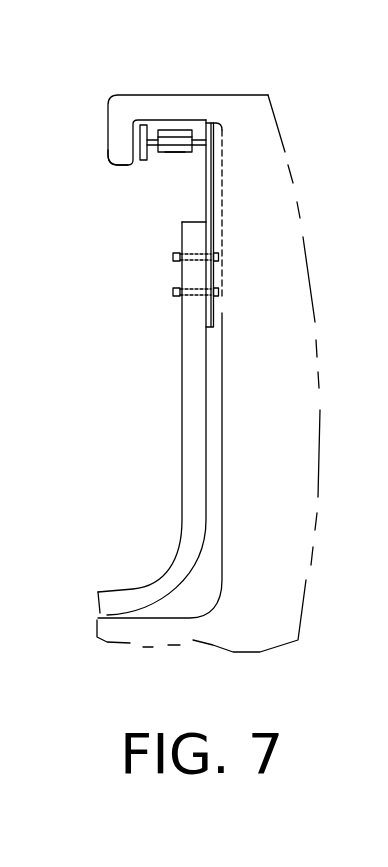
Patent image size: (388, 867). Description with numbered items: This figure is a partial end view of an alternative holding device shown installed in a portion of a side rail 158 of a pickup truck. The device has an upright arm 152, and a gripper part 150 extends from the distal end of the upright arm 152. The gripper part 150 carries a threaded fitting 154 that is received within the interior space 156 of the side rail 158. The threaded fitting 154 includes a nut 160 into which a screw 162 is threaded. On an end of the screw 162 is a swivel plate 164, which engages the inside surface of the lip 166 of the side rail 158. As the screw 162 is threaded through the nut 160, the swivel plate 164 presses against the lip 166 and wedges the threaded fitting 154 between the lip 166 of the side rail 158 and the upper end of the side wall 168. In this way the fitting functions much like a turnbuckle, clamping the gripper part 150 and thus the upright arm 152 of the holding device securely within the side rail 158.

The gripper part 150 is at (206, 242).
The upright arm 152 is at (190, 419).
The threaded fitting 154 is at (189, 121).
The interior space 156 is at (177, 154).
The side rail 158 is at (133, 97).
The nut 160 is at (198, 140).
The screw 162 is at (153, 128).
The swivel plate 164 is at (140, 133).
The lip 166 is at (120, 142).
The side wall 168 is at (223, 423).